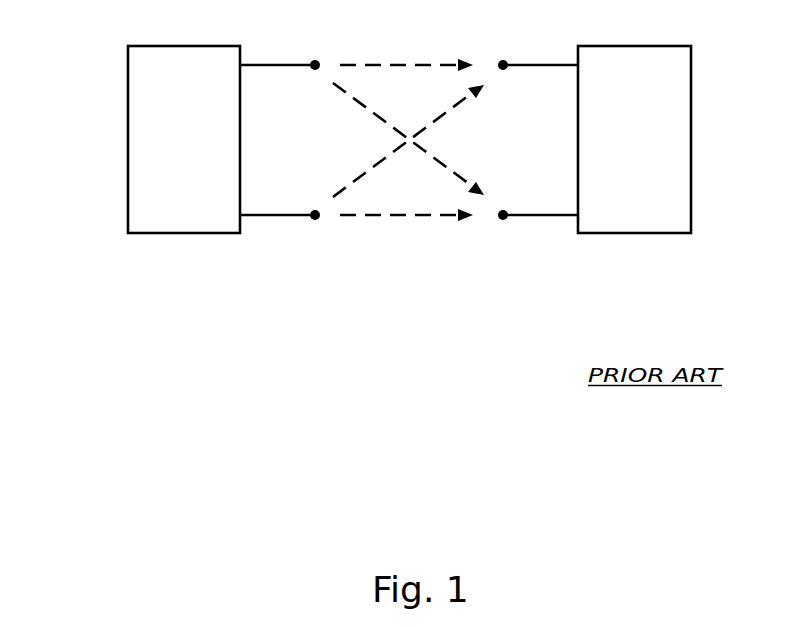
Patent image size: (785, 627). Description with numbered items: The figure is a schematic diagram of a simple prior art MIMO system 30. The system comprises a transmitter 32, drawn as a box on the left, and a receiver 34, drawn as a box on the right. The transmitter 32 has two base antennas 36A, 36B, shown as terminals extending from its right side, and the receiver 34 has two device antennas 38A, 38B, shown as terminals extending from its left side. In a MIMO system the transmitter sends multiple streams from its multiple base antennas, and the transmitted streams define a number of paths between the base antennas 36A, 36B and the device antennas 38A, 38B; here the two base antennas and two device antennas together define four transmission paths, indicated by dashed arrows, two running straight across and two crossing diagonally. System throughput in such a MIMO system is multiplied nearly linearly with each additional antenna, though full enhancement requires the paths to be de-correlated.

The MIMO system 30 is at (82, 141).
The transmitter 32 is at (183, 233).
The receiver 34 is at (635, 233).
The base antenna 36A is at (278, 65).
The base antenna 36B is at (277, 215).
The device antenna 38A is at (540, 65).
The device antenna 38B is at (540, 215).